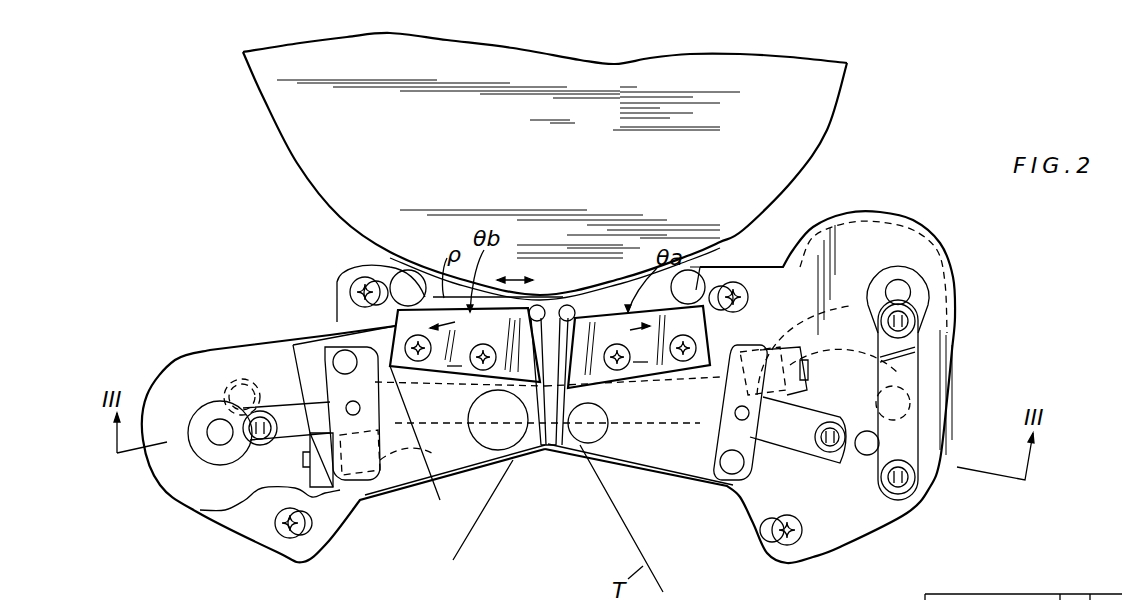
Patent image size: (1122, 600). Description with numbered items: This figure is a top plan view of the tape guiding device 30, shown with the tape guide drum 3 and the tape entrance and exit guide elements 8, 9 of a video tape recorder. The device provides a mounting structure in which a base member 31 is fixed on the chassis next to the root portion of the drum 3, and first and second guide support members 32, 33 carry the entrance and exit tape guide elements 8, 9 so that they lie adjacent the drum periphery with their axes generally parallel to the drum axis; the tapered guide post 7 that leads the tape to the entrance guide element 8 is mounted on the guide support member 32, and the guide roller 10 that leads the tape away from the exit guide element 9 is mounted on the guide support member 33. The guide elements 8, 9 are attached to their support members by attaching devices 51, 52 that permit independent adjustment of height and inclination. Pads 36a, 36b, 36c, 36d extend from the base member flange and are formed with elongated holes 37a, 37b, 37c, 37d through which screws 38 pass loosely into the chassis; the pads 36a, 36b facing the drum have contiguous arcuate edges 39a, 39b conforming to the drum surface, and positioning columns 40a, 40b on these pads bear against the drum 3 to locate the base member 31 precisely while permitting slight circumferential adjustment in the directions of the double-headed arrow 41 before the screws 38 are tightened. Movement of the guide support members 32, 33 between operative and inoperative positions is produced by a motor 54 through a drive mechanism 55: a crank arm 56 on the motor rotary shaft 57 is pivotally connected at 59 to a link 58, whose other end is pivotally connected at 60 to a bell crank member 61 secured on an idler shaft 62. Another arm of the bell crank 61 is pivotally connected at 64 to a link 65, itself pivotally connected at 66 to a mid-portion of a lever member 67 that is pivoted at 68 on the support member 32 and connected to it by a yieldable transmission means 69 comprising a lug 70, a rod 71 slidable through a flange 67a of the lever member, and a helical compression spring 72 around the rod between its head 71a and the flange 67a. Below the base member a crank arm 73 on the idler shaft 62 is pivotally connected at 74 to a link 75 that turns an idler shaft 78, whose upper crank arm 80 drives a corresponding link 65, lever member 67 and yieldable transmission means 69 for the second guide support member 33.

The tape guide drum 3 is at (851, 80).
The tapered guide post 7 is at (582, 435).
The tape entrance guide element 8 is at (567, 303).
The tape exit guide element 9 is at (540, 303).
The guide roller 10 is at (513, 460).
The tape guiding device 30 is at (420, 533).
The base member 31 is at (745, 520).
The first guide support member 32 is at (648, 440).
The second guide support member 33 is at (503, 443).
The pad 36a is at (720, 276).
The pad 36b is at (352, 268).
The pad 36c is at (265, 546).
The pad 36d is at (843, 543).
The hole 37a is at (748, 296).
The hole 37b is at (352, 291).
The hole 37c is at (305, 536).
The hole 37d is at (782, 541).
The screws 38 is at (350, 281).
The arcuate edge 39a is at (617, 293).
The arcuate edge 39b is at (433, 278).
The positioning column 40a is at (693, 272).
The positioning column 40b is at (405, 272).
The double-headed arrow 41 is at (517, 278).
The attaching device 51 is at (639, 347).
The attaching device 52 is at (465, 345).
The motor 54 is at (897, 220).
The drive mechanism 55 is at (925, 417).
The crank arm 56 is at (928, 292).
The rotary shaft 57 is at (908, 283).
The link 58 is at (915, 362).
The pivotal connection 59 is at (912, 310).
The pivotal connection 60 is at (900, 488).
The bell crank member 61 is at (862, 456).
The idler shaft 62 is at (869, 456).
The pivotal connection 64 is at (250, 404).
The link 65 is at (270, 404).
The pivotal connection 66 is at (360, 407).
The lever member 67 is at (365, 421).
The flange 67a is at (340, 490).
The pivotal connection 68 is at (345, 360).
The yieldable transmission means 69 is at (355, 479).
The lug 70 is at (300, 477).
The rod 71 is at (303, 459).
The head 71a is at (447, 447).
The helical compression spring 72 is at (760, 341).
The crank arm 73 is at (925, 394).
The pivotal connection 74 is at (930, 373).
The link 75 is at (616, 428).
The idler shaft 78 is at (212, 431).
The crank arm 80 is at (212, 461).